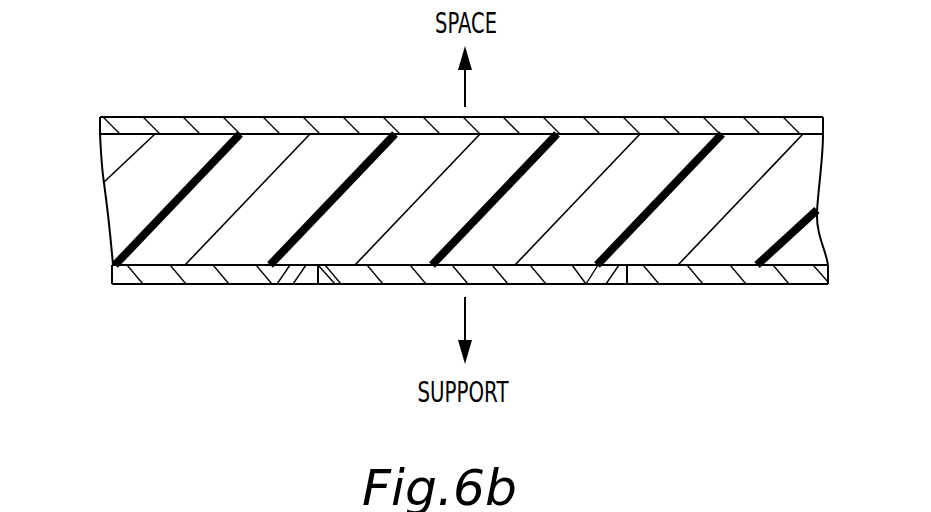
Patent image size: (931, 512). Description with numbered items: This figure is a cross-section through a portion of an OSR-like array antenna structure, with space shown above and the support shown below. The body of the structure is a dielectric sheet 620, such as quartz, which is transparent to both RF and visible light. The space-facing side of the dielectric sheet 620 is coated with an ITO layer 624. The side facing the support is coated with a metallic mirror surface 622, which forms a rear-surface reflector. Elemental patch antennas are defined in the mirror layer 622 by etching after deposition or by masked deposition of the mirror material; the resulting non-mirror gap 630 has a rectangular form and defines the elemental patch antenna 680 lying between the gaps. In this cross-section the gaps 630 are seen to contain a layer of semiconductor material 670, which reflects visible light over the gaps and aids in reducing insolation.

The dielectric sheet 620 is at (103, 193).
The metallic mirror surface 622 is at (134, 286).
The ITO layer 624 is at (205, 116).
The gap 630 is at (269, 306).
The layer of semiconductor material 670 is at (308, 286).
The elemental patch antenna 680 is at (390, 286).